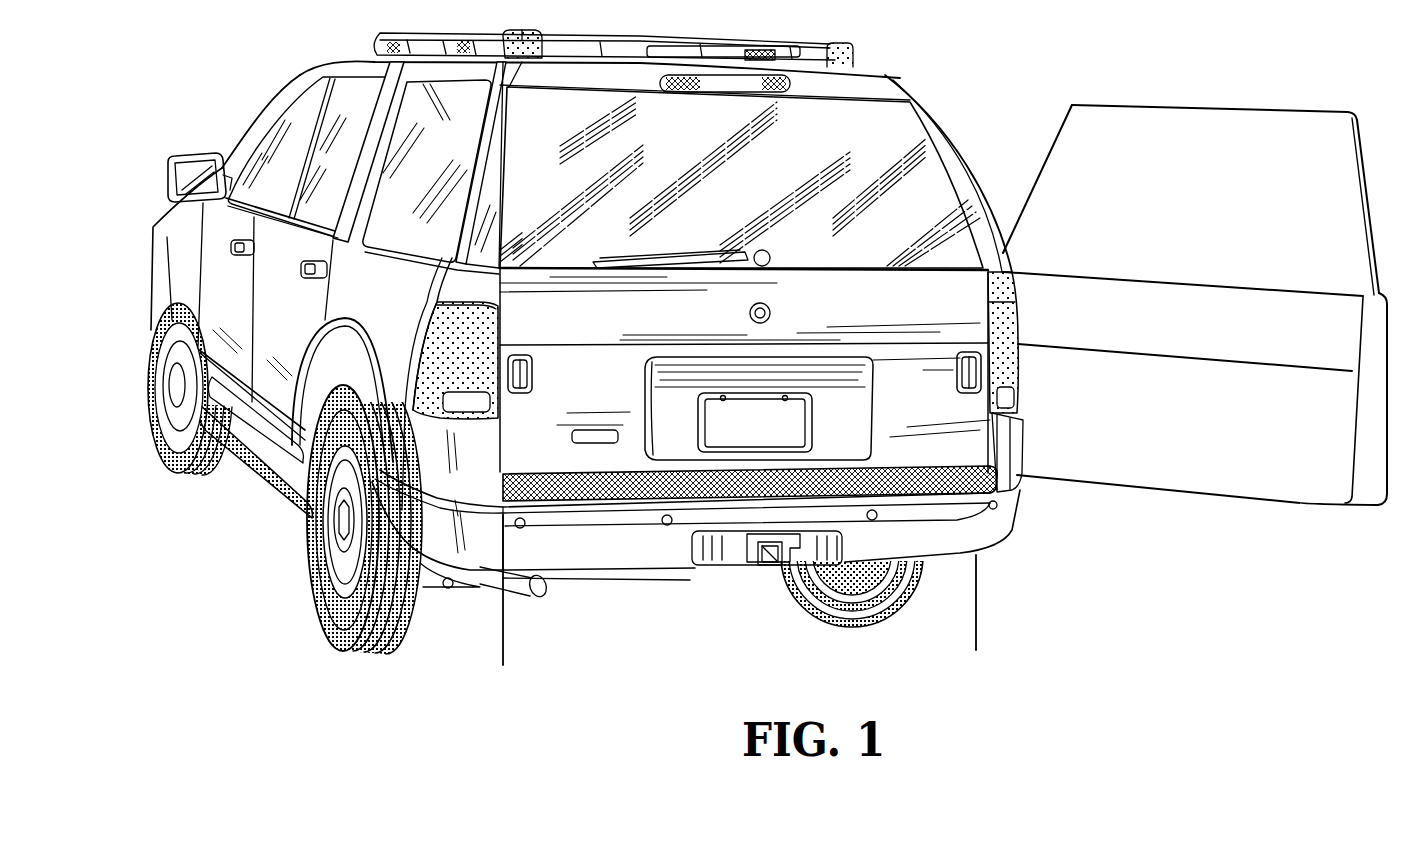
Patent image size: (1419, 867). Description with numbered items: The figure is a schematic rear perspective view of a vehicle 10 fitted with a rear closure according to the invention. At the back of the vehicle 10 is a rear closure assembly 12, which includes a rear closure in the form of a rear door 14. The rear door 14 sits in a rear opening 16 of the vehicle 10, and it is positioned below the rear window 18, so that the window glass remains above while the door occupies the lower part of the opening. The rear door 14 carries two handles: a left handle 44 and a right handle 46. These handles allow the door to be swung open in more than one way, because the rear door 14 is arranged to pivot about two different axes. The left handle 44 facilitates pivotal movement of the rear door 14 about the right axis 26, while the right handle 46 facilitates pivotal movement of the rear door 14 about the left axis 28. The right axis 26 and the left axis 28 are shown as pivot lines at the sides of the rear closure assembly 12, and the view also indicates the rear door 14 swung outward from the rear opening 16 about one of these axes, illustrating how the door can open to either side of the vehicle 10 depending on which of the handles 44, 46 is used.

The vehicle 10 is at (232, 520).
The rear closure assembly 12 is at (667, 438).
The rear door 14 is at (592, 468).
The rear opening 16 is at (505, 453).
The rear window 18 is at (930, 183).
The right axis 26 is at (978, 613).
The left axis 28 is at (505, 630).
The left handle 44 is at (507, 367).
The right handle 46 is at (985, 367).